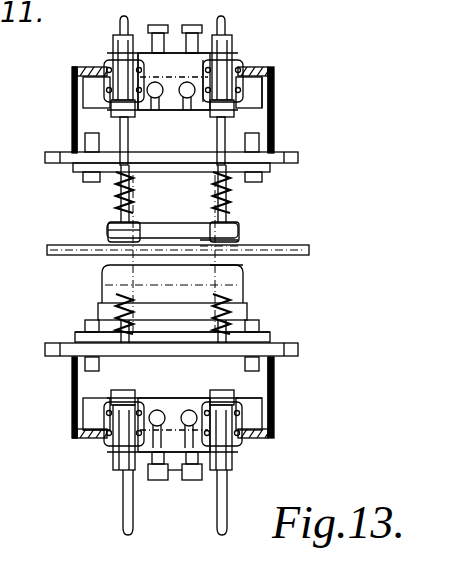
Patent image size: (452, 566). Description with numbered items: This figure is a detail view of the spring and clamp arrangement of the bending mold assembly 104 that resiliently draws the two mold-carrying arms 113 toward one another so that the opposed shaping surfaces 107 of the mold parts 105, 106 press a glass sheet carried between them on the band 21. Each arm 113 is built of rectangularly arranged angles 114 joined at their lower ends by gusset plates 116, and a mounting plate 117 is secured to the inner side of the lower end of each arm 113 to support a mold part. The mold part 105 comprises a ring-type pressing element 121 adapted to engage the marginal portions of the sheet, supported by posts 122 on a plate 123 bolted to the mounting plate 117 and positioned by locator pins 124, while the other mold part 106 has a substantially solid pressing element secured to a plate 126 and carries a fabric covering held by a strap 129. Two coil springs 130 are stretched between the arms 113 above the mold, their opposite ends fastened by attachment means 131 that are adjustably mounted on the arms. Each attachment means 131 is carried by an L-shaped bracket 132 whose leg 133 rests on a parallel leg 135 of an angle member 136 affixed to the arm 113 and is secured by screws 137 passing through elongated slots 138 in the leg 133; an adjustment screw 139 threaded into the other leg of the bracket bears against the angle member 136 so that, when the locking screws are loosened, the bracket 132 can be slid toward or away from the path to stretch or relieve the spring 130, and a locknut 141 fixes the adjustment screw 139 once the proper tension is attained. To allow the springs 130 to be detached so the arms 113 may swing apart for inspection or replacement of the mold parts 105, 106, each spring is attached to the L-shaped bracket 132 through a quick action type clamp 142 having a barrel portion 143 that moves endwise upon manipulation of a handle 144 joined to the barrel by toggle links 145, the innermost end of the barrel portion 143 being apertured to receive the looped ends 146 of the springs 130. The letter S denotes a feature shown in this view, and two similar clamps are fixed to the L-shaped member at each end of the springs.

The band 21 is at (300, 252).
The slide S is at (246, 241).
The assembly 104 is at (284, 243).
The mold part 105 is at (104, 240).
The mold part 106 is at (100, 279).
The shaping surfaces 107 is at (229, 274).
The arms 113 is at (280, 124).
The angles 114 is at (95, 80).
The gusset plates 116 is at (72, 103).
The mounting plate 117 is at (290, 158).
The ring-type pressing element 121 is at (172, 230).
The posts 122 is at (110, 221).
The plate 123 is at (180, 216).
The locator pins 124 is at (80, 178).
The plate 126 is at (258, 340).
The strap 129 is at (100, 310).
The coil springs 130 is at (115, 190).
The attachment means 131 is at (72, 70).
The L-shaped bracket 132 is at (246, 407).
The leg 133 is at (198, 62).
The leg 135 is at (107, 430).
The angle member 136 is at (245, 96).
The screws 137 is at (154, 100).
The elongated slots 138 is at (158, 406).
The adjustment screw 139 is at (160, 25).
The locknut 141 is at (176, 478).
The quick action type clamps 142 is at (114, 52).
The barrel portion 143 is at (115, 128).
The handle 144 is at (118, 38).
The toggle links 145 is at (240, 66).
The looped ends 146 is at (206, 222).